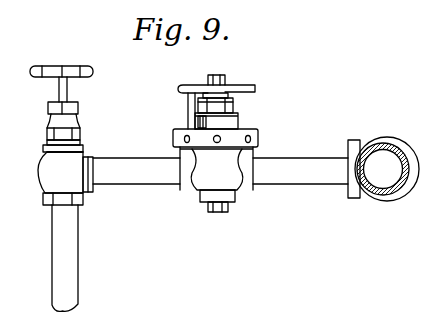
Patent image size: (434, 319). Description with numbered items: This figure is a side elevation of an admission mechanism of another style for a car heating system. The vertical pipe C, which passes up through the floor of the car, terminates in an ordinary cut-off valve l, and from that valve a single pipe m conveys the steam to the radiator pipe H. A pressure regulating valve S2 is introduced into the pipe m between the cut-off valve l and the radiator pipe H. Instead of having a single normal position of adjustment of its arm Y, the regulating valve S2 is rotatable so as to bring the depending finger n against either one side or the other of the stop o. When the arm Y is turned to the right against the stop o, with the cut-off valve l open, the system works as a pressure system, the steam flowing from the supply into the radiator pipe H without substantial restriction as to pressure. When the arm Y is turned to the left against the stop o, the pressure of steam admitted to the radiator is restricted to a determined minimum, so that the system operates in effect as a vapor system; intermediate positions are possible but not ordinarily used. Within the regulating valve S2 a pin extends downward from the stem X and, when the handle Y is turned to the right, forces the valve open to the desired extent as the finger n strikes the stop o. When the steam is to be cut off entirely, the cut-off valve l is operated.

The cut-off valve l is at (45, 178).
The vertical pipe C is at (72, 258).
The pipe m is at (284, 184).
The stem X is at (218, 75).
The arm Y is at (177, 90).
The stop o is at (205, 120).
The depending finger n is at (189, 109).
The pressure regulating valve S2 is at (223, 157).
The radiator pipe H is at (385, 147).